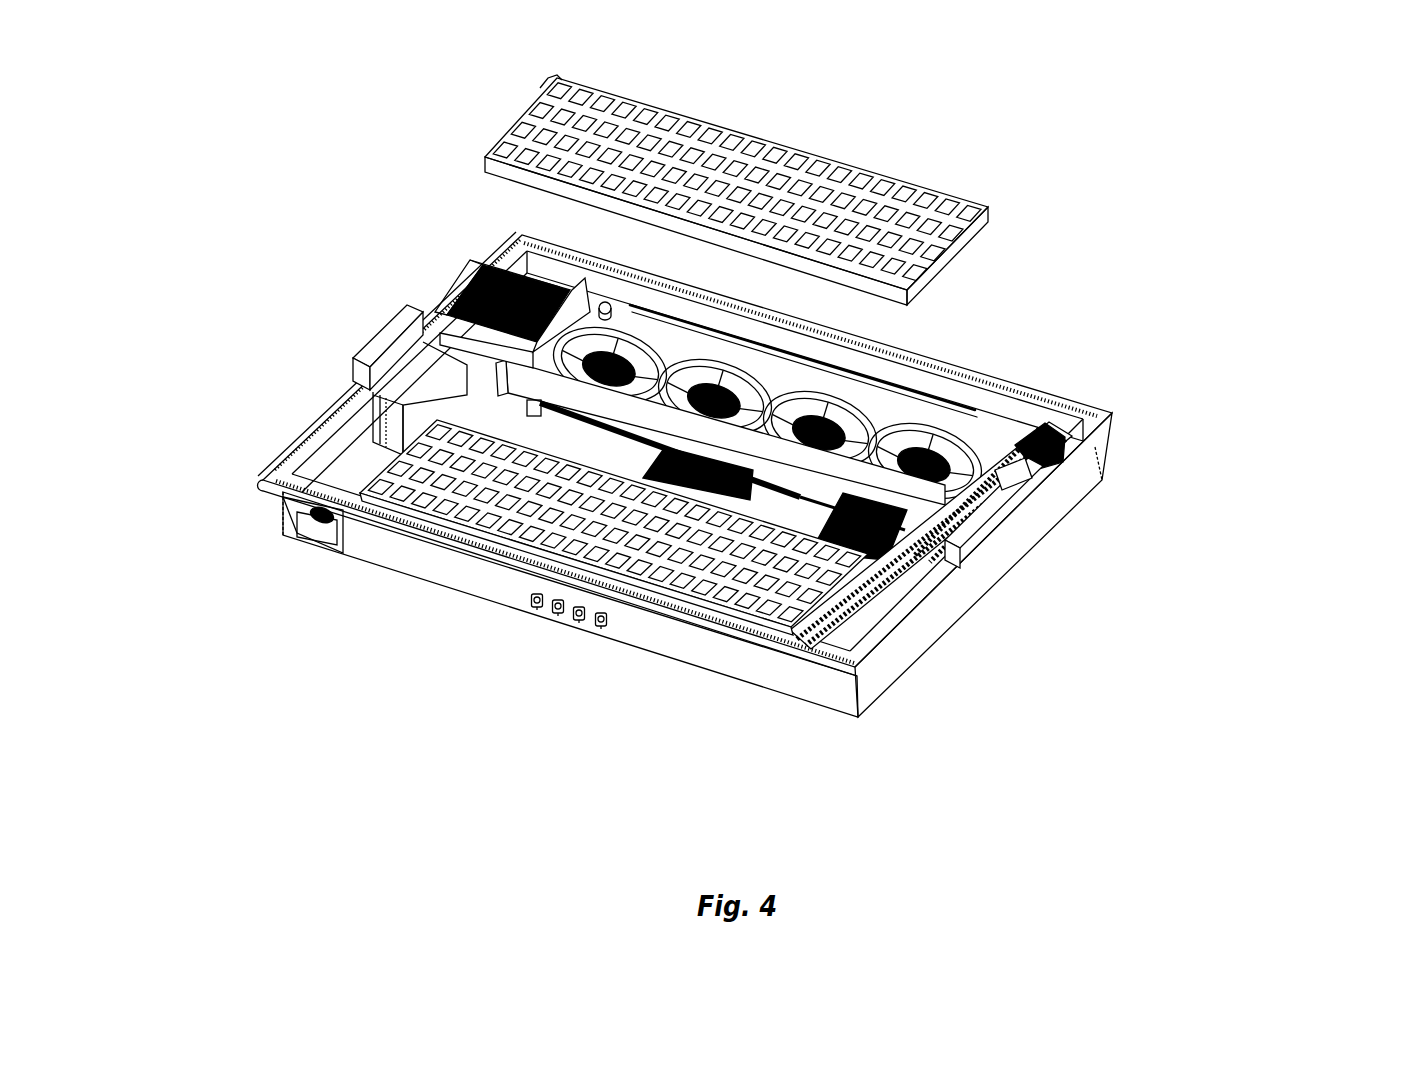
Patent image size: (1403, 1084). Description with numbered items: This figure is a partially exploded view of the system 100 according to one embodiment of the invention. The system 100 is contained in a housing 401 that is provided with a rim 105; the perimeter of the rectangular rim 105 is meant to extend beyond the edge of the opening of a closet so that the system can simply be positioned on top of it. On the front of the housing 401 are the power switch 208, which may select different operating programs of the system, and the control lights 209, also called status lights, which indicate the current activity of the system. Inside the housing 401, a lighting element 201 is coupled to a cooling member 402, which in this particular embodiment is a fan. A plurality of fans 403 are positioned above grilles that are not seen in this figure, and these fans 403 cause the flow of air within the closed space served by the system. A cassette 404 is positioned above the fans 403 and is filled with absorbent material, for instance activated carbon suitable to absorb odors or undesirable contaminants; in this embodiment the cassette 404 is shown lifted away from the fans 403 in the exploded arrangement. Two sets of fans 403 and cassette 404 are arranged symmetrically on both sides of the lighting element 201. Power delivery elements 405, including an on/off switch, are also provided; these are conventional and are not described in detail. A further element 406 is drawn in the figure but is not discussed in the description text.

The system 100 is at (806, 474).
The rim 105 is at (1110, 412).
The lighting element 201 is at (440, 332).
The power switch 208 is at (293, 525).
The status lights 209 is at (560, 638).
The housing 401 is at (1013, 553).
The cooling member 402 is at (467, 280).
The fans 403 is at (947, 452).
The cassette 404 is at (875, 172).
The power delivery elements 405 is at (1023, 482).
The rail 406 is at (877, 360).